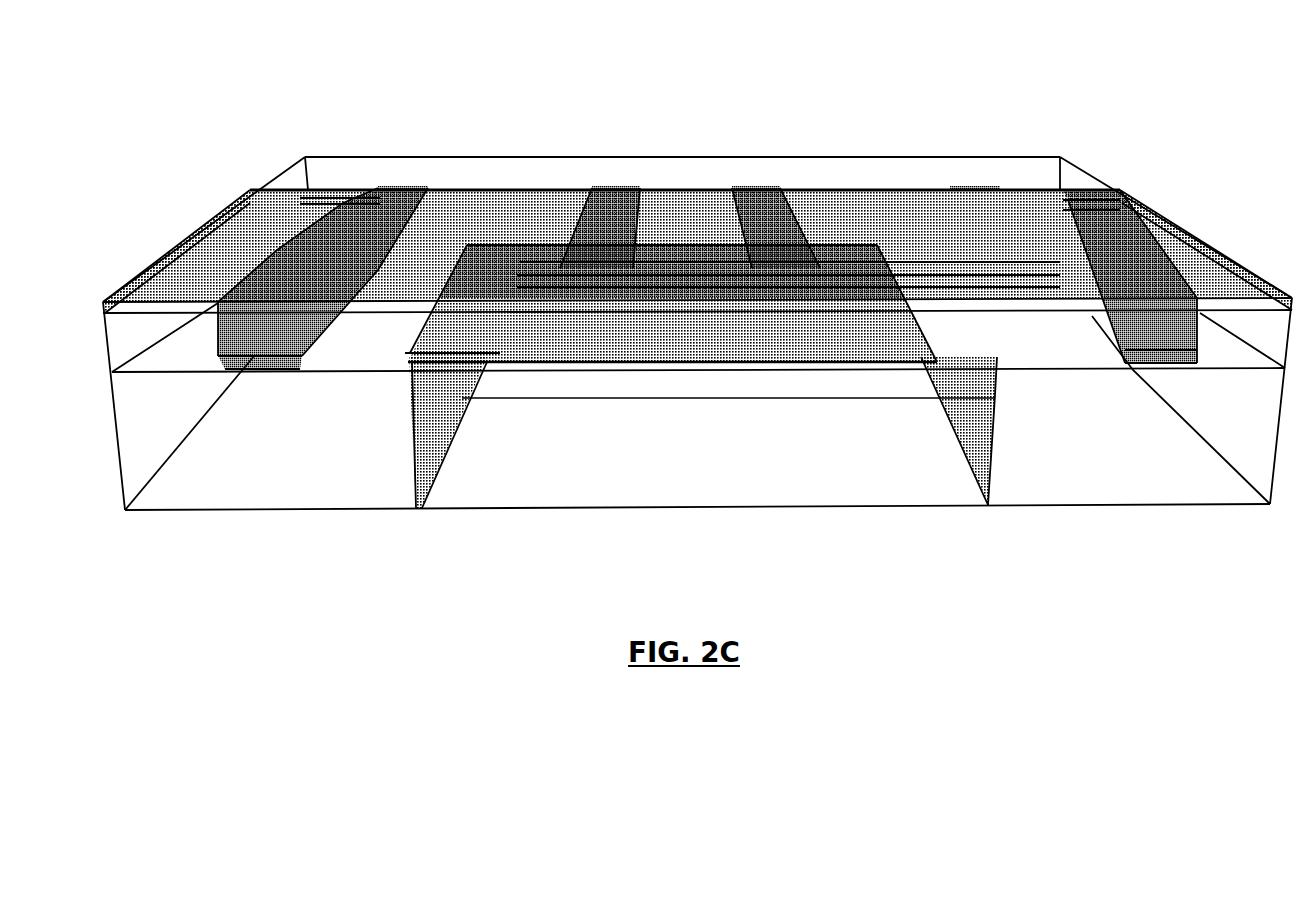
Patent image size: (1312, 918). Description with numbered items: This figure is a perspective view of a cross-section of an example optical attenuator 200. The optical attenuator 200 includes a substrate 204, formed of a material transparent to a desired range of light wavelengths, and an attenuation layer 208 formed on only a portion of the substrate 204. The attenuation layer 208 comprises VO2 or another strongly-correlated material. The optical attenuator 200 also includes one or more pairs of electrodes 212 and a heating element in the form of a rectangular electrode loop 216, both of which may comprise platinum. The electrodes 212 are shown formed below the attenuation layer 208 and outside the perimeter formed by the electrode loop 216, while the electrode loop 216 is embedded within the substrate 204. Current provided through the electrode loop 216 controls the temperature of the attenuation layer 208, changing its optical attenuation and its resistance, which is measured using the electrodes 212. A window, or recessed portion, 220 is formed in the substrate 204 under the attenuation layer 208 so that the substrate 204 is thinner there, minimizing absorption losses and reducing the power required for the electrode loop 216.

The optical attenuator 200 is at (194, 99).
The substrate 204 is at (265, 488).
The attenuation layer 208 is at (1172, 243).
The electrodes 212 is at (265, 347).
The electrode loop 216 is at (463, 342).
The window 220 is at (820, 463).